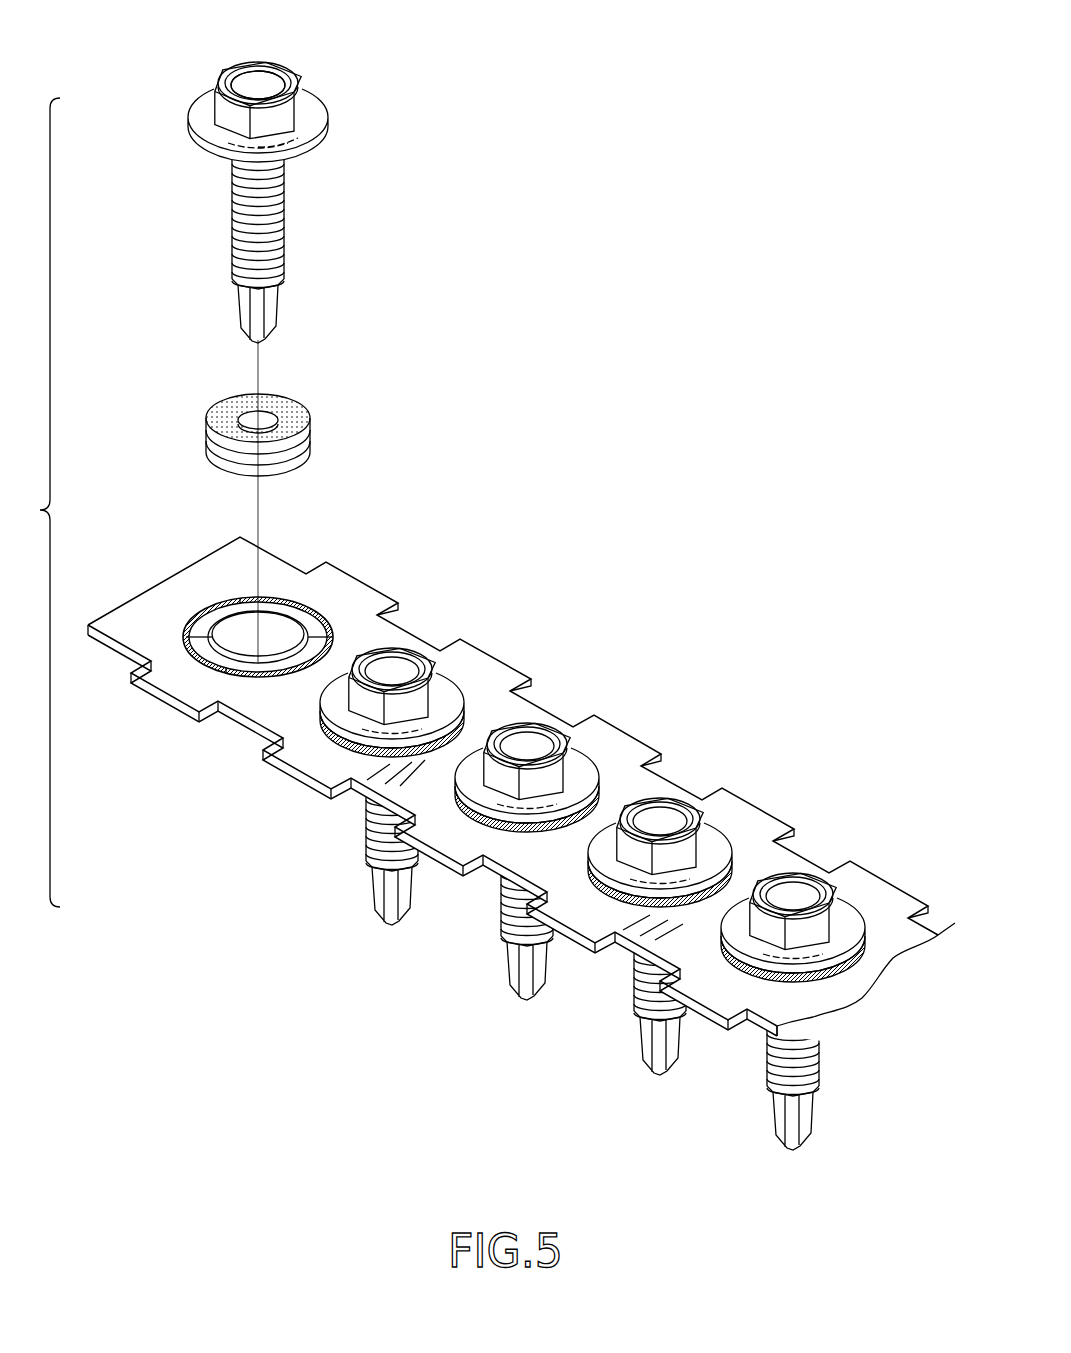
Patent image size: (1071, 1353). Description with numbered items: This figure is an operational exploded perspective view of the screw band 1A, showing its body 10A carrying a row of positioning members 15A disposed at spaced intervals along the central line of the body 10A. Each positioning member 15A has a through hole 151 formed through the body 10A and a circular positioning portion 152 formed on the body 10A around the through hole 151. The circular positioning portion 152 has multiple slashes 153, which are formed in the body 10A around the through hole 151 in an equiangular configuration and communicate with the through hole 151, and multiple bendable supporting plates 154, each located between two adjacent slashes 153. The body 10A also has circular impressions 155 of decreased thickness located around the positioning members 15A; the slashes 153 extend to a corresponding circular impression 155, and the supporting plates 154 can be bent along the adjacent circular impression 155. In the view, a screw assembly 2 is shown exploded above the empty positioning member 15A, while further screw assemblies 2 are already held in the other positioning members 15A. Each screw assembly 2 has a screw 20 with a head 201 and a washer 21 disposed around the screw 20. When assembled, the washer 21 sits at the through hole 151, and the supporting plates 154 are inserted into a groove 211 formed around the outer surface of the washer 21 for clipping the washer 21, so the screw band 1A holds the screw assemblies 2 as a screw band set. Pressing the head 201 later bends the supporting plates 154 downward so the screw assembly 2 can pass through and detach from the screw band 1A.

The screw band 1A is at (623, 644).
The screw assembly 2 is at (348, 124).
The screw 20 is at (313, 236).
The head 201 is at (282, 80).
The washer 21 is at (312, 405).
The groove 211 is at (318, 448).
The body 10A is at (178, 565).
The positioning member 15A is at (296, 588).
The through hole 151 is at (286, 640).
The circular positioning portion 152 is at (272, 682).
The slash 153 is at (207, 632).
The supporting plate 154 is at (240, 604).
The circular impression 155 is at (215, 657).